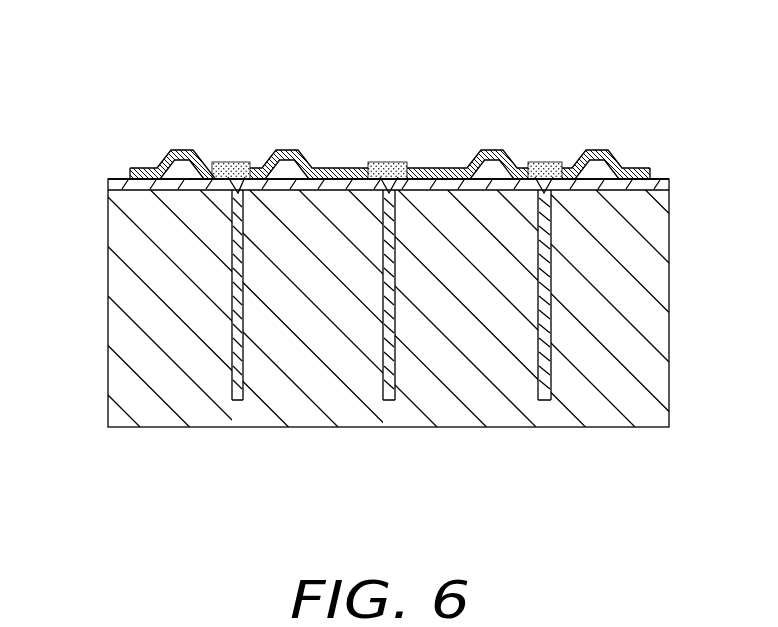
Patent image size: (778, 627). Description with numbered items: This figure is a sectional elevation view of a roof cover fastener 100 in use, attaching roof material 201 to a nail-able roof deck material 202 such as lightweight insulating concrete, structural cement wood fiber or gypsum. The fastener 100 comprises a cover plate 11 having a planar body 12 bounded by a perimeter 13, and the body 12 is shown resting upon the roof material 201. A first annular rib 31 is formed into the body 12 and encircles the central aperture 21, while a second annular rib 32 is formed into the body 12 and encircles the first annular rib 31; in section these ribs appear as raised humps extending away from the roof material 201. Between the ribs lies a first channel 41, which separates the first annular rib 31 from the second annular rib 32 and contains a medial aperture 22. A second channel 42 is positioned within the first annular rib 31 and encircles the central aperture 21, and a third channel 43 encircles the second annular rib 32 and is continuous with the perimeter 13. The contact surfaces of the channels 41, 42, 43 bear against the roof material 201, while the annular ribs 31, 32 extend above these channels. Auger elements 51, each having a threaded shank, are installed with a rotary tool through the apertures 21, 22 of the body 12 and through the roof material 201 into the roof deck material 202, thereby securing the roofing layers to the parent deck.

The roof cover fastener 100 is at (123, 60).
The cover plate 11 is at (658, 168).
The planar body 12 is at (610, 152).
The perimeter 13 is at (124, 172).
The central aperture 21 is at (409, 177).
The medial aperture 22 is at (210, 160).
The first annular rib 31 is at (284, 160).
The second annular rib 32 is at (206, 170).
The first channel 41 is at (248, 160).
The second channel 42 is at (347, 166).
The third channel 43 is at (145, 168).
The auger element 51 is at (237, 398).
The roof material 201 is at (158, 192).
The nail-able roof deck material 202 is at (148, 308).